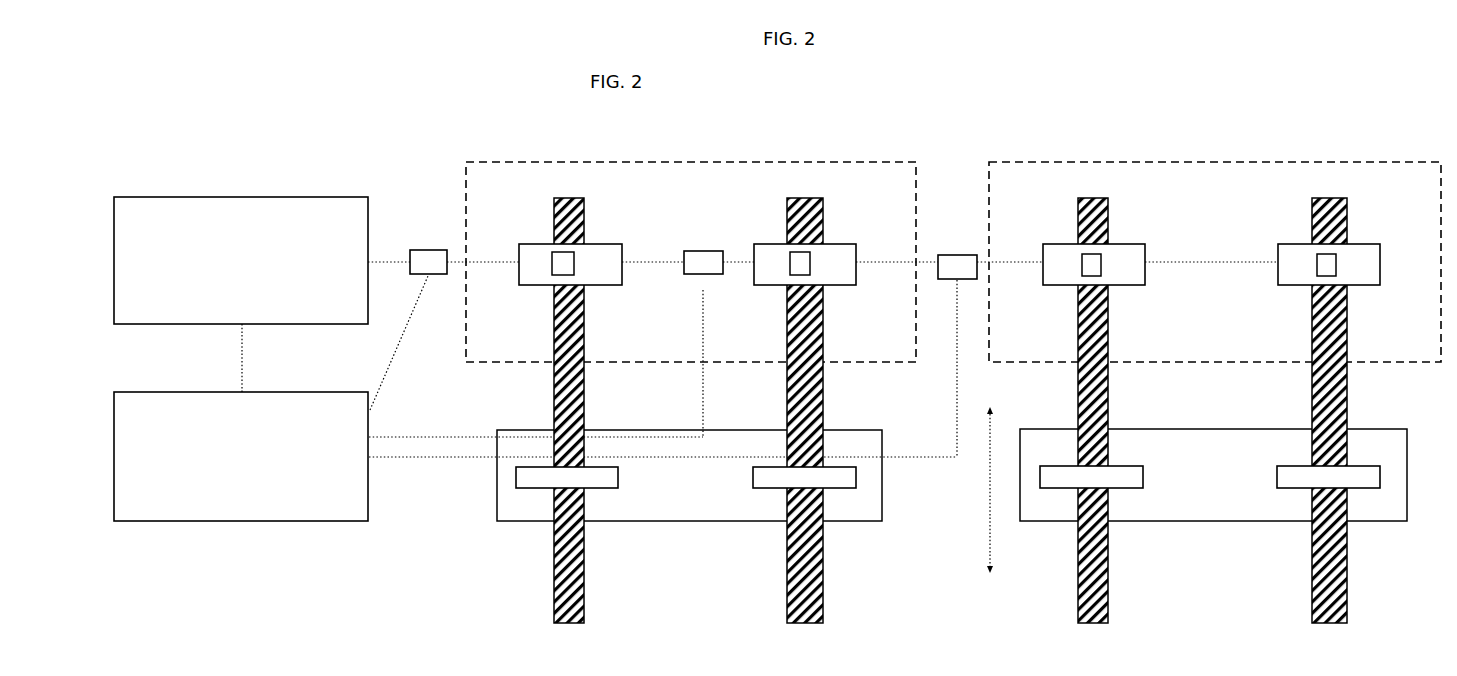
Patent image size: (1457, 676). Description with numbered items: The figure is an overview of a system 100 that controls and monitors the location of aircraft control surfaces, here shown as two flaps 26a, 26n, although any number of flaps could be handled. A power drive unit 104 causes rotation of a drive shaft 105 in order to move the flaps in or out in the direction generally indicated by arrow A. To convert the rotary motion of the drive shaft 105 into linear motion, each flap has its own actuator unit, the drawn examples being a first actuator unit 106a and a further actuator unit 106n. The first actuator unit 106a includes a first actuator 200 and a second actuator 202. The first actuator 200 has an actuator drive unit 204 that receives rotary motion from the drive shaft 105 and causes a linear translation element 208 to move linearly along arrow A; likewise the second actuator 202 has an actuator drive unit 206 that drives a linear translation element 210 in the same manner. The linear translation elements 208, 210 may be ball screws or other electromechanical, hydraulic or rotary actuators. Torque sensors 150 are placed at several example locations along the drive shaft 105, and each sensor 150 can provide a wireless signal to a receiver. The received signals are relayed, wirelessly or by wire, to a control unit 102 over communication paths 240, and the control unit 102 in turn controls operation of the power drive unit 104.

The system 100 is at (471, 115).
The control unit 102 is at (241, 456).
The power drive unit 104 is at (241, 260).
The drive shaft 105 is at (396, 260).
The first actuator unit 106a is at (690, 162).
The actuator unit 106n is at (1213, 162).
The torque sensor 150 is at (427, 249).
The first actuator 200 is at (603, 410).
The second actuator 202 is at (834, 402).
The actuator drive unit 204 is at (625, 285).
The actuator drive unit 206 is at (840, 288).
The linear translation element 208 is at (586, 332).
The linear translation element 210 is at (824, 322).
The communication paths 240 is at (387, 374).
The flap 26a is at (692, 523).
The flap 26n is at (1213, 522).
The arrow A is at (987, 522).